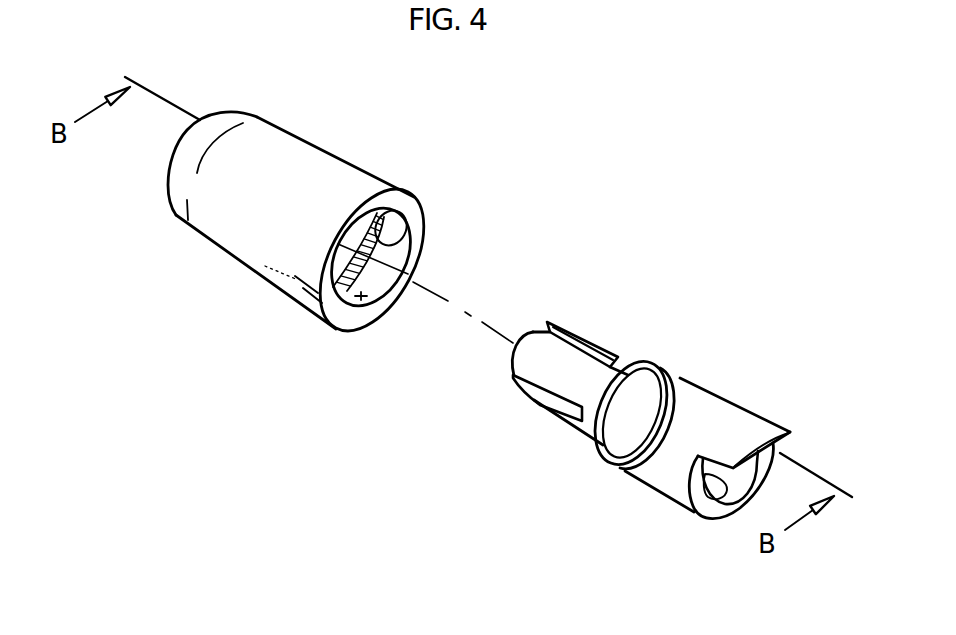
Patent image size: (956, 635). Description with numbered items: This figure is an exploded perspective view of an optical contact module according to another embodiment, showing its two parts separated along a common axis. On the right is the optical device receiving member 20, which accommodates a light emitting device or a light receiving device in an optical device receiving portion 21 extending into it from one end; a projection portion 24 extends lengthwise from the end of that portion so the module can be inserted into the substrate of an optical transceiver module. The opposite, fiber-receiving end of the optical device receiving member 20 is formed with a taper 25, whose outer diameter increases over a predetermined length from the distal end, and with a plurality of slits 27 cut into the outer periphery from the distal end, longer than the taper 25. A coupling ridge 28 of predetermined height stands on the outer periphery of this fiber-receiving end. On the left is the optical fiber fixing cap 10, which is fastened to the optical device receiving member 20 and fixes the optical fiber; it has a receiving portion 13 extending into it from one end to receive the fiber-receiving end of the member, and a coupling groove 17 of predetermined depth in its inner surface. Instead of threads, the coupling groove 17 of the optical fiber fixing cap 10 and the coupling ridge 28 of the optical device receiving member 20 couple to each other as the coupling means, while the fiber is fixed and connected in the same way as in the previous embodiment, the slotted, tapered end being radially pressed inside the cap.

The optical fiber fixing cap 10 is at (282, 280).
The receiving portion 13 is at (365, 297).
The coupling groove 17 is at (403, 230).
The optical device receiving member 20 is at (631, 417).
The optical device receiving portion 21 is at (718, 496).
The projection portion 24 is at (763, 432).
The taper 25 is at (545, 322).
The slits 27 is at (513, 387).
The coupling ridge 28 is at (655, 365).